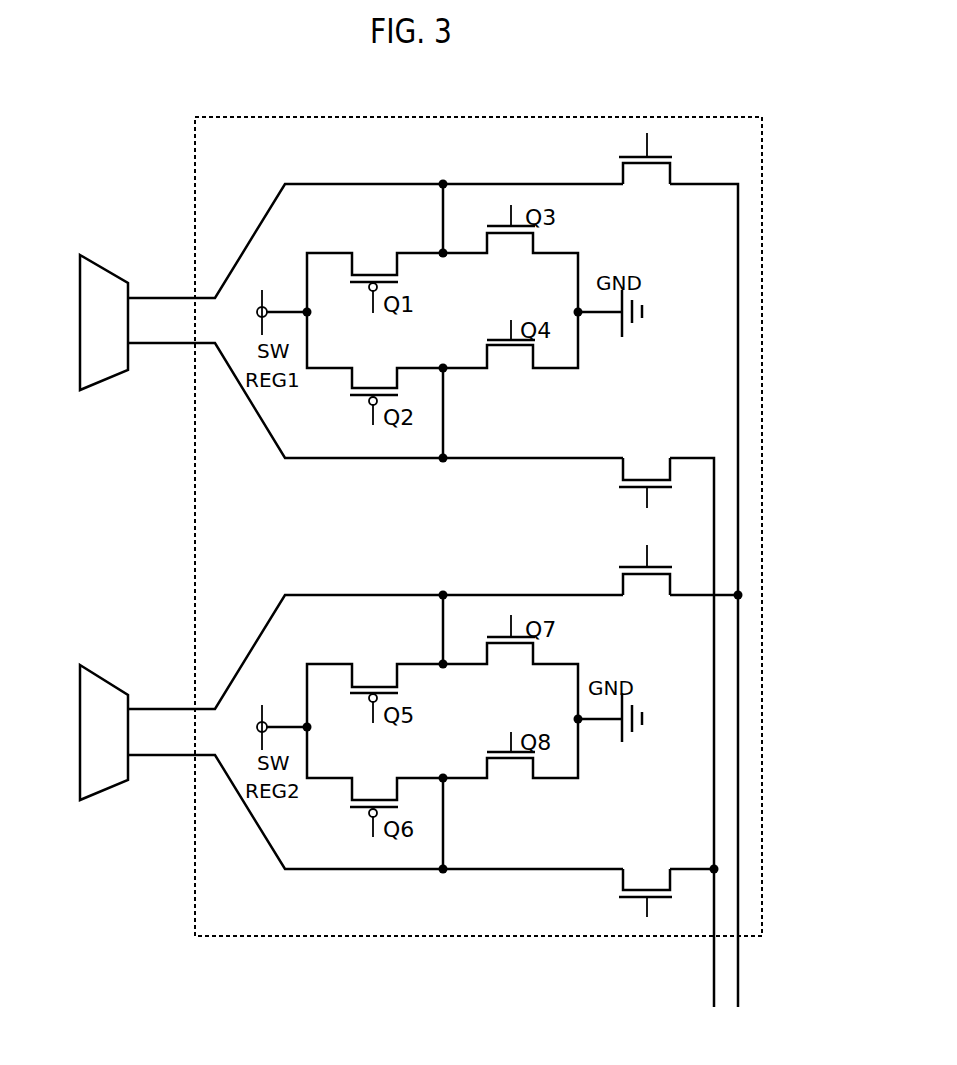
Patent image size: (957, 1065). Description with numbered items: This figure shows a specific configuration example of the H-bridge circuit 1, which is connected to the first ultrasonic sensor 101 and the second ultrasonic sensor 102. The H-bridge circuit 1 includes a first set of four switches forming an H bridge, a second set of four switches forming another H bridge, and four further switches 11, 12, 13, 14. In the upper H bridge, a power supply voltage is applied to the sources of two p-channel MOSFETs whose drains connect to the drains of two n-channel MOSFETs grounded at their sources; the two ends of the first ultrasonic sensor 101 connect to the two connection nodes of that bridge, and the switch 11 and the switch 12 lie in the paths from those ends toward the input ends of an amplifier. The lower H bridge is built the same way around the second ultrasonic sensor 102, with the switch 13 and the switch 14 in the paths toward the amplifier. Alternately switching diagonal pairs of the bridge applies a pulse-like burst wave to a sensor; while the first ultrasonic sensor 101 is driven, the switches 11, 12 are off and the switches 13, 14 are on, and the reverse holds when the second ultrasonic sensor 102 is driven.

The H-bridge circuit 1 is at (757, 117).
The switch 11 is at (650, 190).
The switch 12 is at (650, 457).
The switch 13 is at (647, 600).
The switch 14 is at (649, 868).
The first ultrasonic sensor 101 is at (97, 263).
The second ultrasonic sensor 102 is at (96, 673).